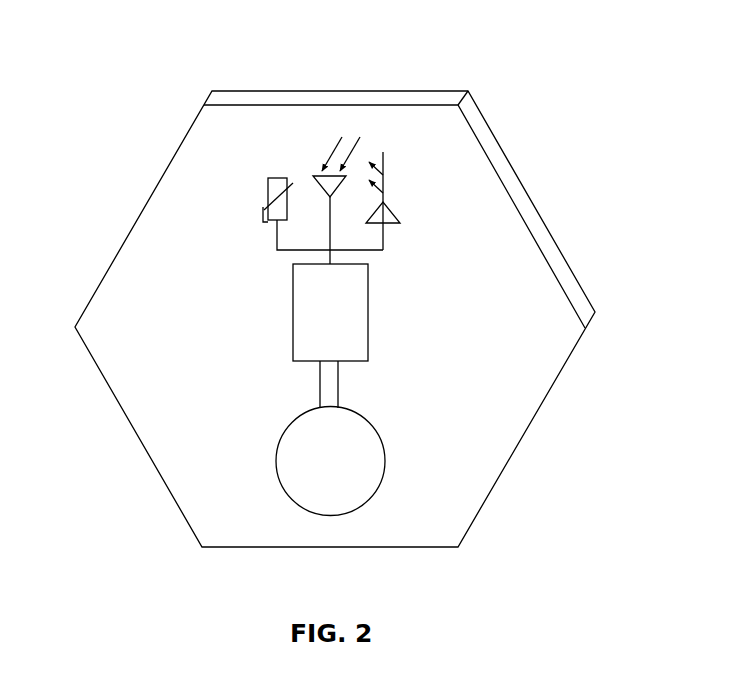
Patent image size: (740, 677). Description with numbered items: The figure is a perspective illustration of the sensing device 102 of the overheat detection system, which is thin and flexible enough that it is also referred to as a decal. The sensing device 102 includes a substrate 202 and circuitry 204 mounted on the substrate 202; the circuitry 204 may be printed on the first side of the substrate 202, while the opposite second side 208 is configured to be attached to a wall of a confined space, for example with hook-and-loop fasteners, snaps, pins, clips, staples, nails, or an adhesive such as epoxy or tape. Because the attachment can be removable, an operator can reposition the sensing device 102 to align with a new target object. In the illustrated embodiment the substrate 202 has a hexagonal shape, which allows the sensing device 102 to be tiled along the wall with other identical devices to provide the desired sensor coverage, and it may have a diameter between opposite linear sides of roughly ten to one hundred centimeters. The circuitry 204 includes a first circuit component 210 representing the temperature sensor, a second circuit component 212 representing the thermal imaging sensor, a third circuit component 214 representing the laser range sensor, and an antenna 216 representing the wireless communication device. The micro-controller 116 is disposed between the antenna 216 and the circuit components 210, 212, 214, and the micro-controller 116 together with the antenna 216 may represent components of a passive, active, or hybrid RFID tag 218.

The sensing device 102 is at (140, 124).
The substrate 202 is at (470, 108).
The circuitry 204 is at (178, 240).
The second side 208 is at (485, 173).
The first circuit component 210 is at (268, 183).
The second circuit component 212 is at (318, 175).
The third circuit component 214 is at (384, 175).
The micro-controller 116 is at (292, 332).
The antenna 216 is at (360, 505).
The RFID tag 218 is at (432, 392).